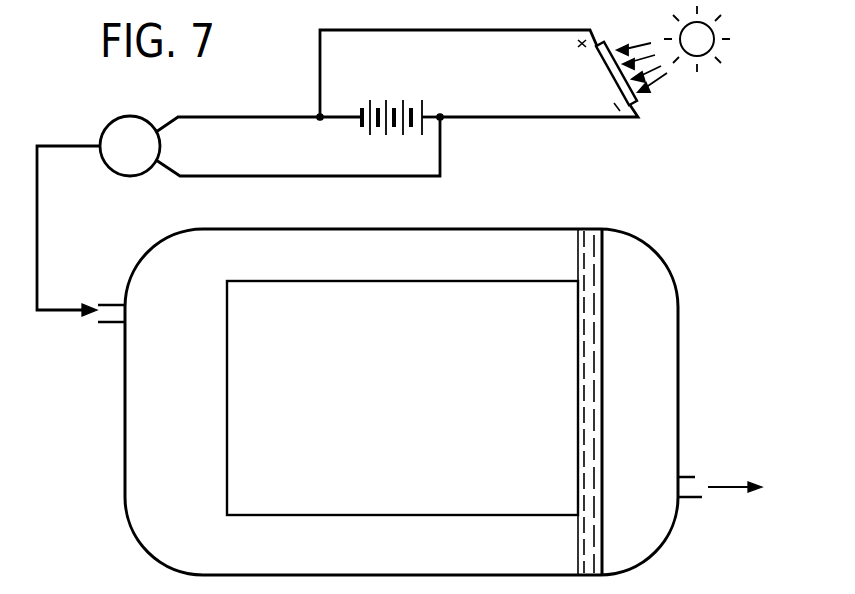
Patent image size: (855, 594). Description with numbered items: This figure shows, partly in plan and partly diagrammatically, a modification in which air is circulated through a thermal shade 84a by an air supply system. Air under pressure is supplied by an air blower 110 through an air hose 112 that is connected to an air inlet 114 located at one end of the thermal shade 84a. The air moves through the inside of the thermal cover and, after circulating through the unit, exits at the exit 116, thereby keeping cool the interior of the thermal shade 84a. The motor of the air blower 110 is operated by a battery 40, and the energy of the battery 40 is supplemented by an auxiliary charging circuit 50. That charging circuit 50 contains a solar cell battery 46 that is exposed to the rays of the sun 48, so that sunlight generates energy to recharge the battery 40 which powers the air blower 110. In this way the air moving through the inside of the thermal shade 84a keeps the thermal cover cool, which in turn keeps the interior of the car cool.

The air blower 110 is at (118, 124).
The battery 40 is at (403, 106).
The solar cell battery 46 is at (608, 70).
The sun 48 is at (712, 36).
The auxiliary charging circuit 50 is at (540, 118).
The thermal shade 84a is at (424, 222).
The air hose 112 is at (38, 226).
The air inlet 114 is at (107, 323).
The air exit 116 is at (686, 498).